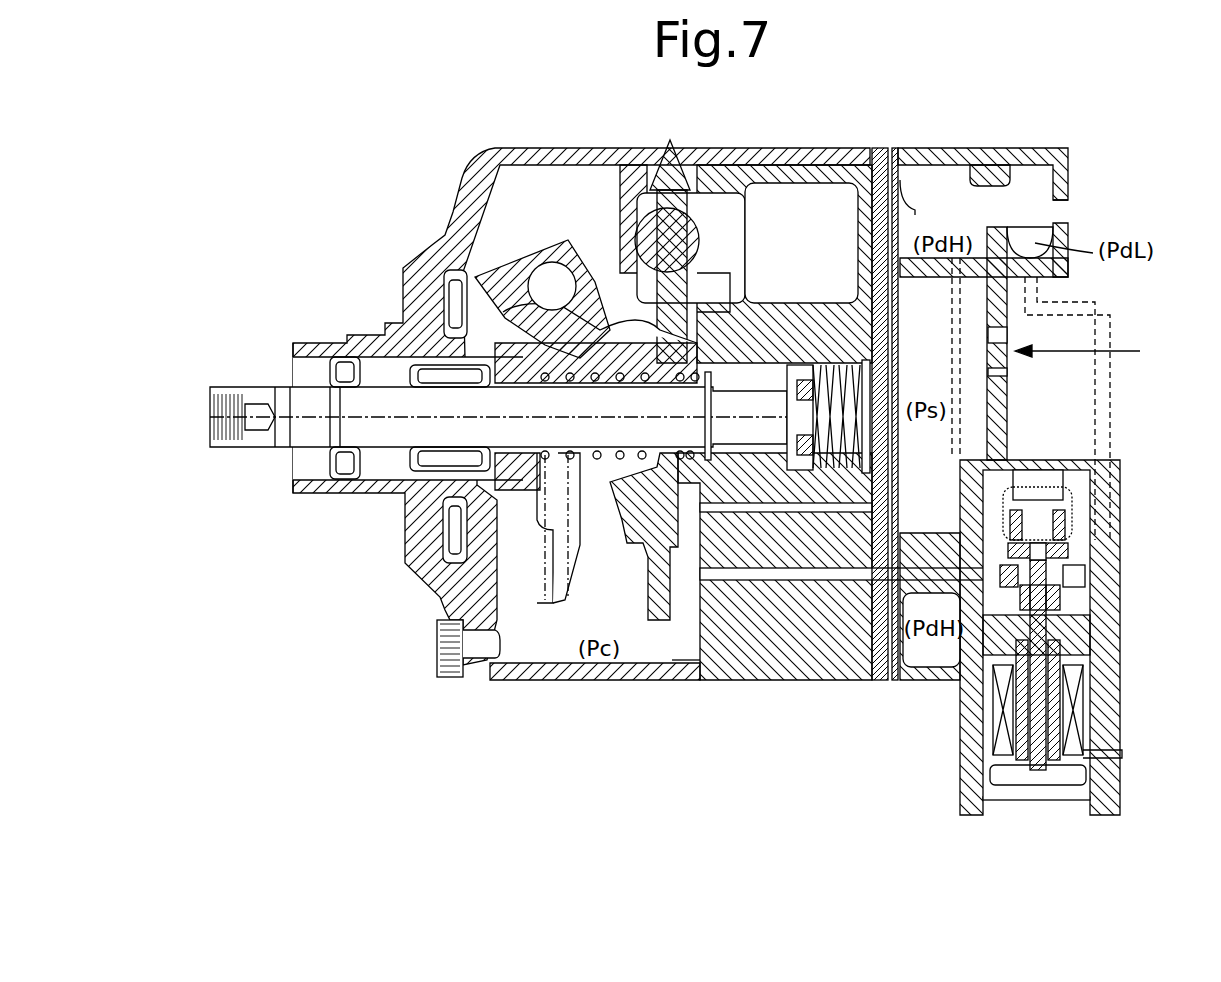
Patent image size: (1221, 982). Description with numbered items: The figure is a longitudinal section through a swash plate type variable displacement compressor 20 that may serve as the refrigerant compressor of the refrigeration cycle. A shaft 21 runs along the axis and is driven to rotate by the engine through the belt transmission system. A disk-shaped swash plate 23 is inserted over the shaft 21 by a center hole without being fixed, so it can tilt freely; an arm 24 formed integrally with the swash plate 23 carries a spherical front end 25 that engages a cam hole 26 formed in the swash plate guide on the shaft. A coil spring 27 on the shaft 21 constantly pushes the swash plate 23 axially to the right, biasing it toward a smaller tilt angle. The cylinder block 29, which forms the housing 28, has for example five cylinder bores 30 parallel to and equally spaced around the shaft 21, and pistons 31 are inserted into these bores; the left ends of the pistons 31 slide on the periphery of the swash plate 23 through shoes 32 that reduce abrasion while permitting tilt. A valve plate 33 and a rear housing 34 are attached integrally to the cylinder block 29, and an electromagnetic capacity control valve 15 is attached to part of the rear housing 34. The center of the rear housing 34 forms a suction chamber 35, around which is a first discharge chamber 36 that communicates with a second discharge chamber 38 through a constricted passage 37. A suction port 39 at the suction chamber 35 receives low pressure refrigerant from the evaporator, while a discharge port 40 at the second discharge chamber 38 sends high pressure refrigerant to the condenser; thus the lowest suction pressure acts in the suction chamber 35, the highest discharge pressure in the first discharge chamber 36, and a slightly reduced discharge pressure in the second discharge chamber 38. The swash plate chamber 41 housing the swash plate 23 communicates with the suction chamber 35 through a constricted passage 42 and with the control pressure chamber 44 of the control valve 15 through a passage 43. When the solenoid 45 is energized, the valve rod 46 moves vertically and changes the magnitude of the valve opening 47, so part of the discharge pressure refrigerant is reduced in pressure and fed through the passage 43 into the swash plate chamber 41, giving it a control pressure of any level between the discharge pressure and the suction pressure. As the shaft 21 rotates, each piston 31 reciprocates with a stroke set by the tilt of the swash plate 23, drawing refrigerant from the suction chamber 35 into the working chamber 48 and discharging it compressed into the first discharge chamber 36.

The capacity control valve 15 is at (1120, 677).
The swash plate type variable displacement compressor 20 is at (448, 168).
The shaft 21 is at (250, 387).
The swash plate 23 is at (641, 590).
The arm 24 is at (588, 300).
The spherical front end 25 is at (552, 272).
The cam hole 26 is at (490, 270).
The coil spring 27 is at (537, 605).
The housing 28 is at (493, 682).
The cylinder block 29 is at (723, 668).
The cylinder bores 30 is at (760, 183).
The pistons 31 is at (718, 200).
The shoes 32 is at (670, 140).
The valve plate 33 is at (894, 175).
The rear housing 34 is at (935, 162).
The suction chamber 35 is at (940, 375).
The first discharge chamber 36 is at (967, 185).
The constricted passage 37 is at (1000, 227).
The second discharge chamber 38 is at (1035, 178).
The suction port 39 is at (998, 338).
The discharge port 40 is at (1063, 210).
The swash plate chamber 41 is at (567, 655).
The constricted passage 42 is at (777, 514).
The passage 43 is at (823, 582).
The control pressure chamber 44 is at (1075, 577).
The solenoid 45 is at (1080, 714).
The valve rod 46 is at (1040, 550).
The valve opening 47 is at (1048, 595).
The working chamber 48 is at (878, 200).